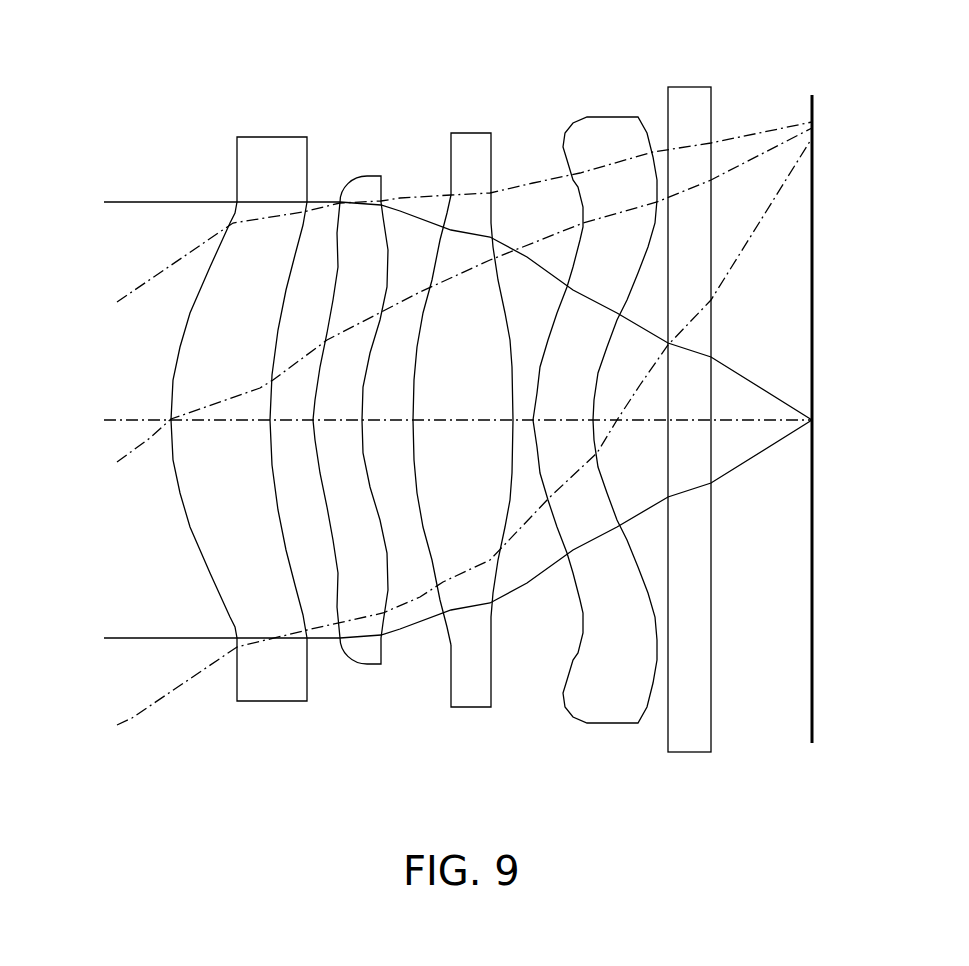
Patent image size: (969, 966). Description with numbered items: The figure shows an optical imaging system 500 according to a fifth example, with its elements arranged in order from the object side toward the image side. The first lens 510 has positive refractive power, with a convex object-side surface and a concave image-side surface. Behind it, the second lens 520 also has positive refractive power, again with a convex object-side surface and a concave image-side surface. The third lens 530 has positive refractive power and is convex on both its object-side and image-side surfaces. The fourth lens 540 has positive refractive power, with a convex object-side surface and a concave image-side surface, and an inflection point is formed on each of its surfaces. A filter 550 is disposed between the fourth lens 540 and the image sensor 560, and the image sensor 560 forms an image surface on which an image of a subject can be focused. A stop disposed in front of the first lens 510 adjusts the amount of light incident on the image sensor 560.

The optical imaging system 500 is at (466, 84).
The first lens 510 is at (273, 702).
The second lens 520 is at (372, 664).
The third lens 530 is at (470, 707).
The fourth lens 540 is at (615, 723).
The filter 550 is at (688, 752).
The image sensor 560 is at (812, 723).